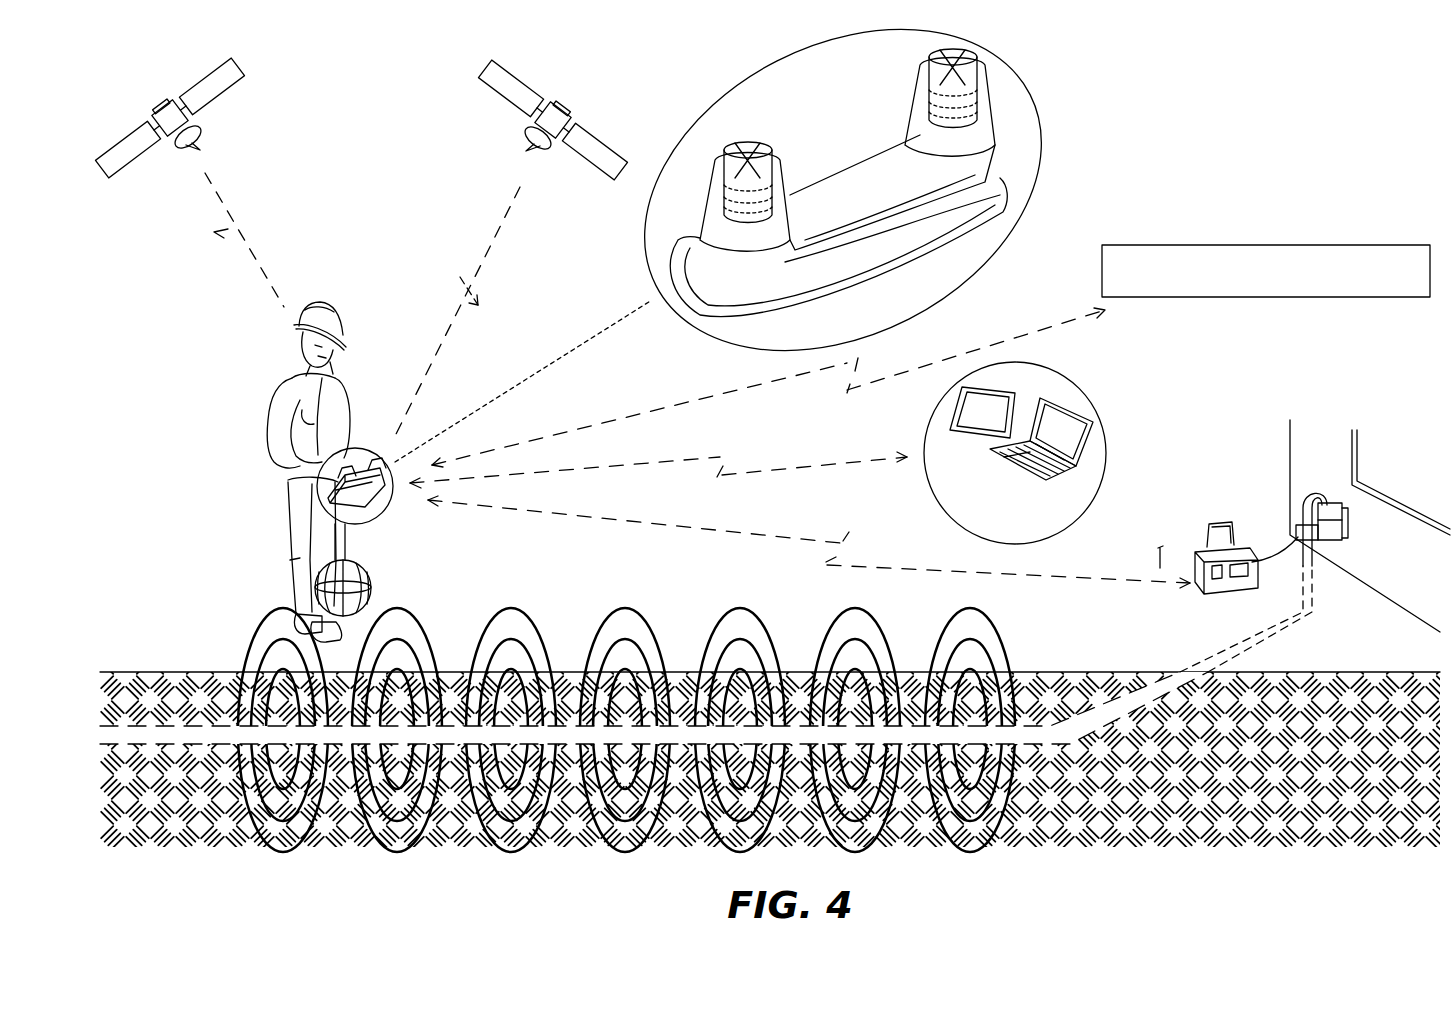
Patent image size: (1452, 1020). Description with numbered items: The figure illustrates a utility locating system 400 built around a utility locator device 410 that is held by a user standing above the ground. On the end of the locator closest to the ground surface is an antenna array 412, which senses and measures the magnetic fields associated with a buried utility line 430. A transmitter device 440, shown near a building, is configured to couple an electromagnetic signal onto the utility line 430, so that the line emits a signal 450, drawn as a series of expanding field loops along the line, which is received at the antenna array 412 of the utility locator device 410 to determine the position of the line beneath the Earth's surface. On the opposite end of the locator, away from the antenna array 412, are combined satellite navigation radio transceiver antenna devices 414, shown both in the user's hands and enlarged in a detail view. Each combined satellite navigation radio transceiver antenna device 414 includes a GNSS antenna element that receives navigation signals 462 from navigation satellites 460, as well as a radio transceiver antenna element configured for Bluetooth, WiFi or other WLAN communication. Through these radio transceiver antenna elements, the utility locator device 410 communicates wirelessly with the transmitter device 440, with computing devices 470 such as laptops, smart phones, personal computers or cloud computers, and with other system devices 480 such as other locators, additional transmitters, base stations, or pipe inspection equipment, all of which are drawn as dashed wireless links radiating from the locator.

The utility locating system 400 is at (1295, 152).
The utility locator device 410 is at (353, 538).
The antenna array 412 is at (380, 587).
The combined satellite navigation radio transceiver antenna device 414 is at (380, 450).
The utility line 430 is at (1003, 634).
The transmitter device 440 is at (1195, 528).
The signal 450 is at (252, 612).
The navigation satellites 460 is at (250, 80).
The navigation signals 462 is at (247, 268).
The computing devices 470 is at (1015, 453).
The other system devices 480 is at (1266, 271).